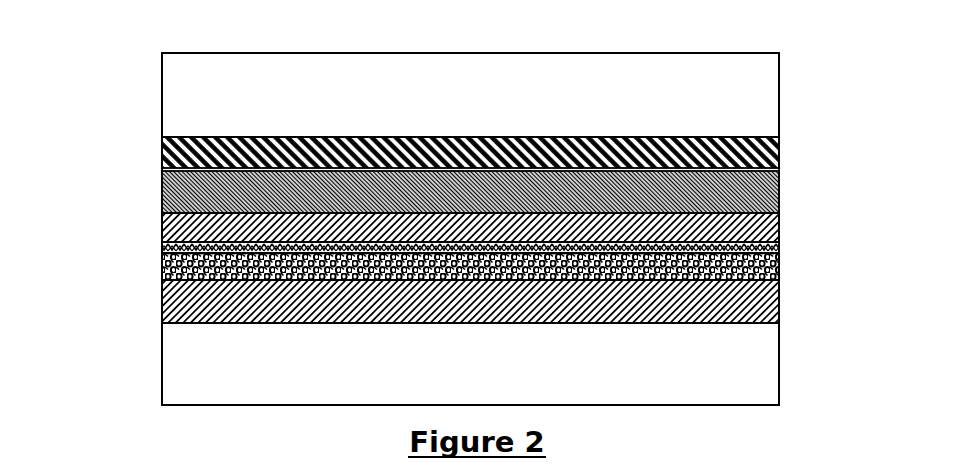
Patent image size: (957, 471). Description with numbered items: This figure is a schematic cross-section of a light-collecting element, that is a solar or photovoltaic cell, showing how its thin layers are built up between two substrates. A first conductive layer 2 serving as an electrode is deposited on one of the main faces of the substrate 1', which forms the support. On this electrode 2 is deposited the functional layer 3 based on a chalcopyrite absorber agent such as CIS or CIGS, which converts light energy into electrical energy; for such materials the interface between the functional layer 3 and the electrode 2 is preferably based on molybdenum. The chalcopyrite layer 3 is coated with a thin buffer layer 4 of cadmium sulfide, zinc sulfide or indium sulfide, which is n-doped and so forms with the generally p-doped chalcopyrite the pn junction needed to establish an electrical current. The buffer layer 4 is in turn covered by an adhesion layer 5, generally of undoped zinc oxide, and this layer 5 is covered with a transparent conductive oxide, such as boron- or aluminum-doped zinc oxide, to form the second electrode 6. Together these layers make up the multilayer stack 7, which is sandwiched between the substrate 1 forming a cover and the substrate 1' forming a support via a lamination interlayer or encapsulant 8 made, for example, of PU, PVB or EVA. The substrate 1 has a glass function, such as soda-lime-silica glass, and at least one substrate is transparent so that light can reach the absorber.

The substrate 1 is at (470, 95).
The substrate 1' is at (470, 364).
The first conductive layer 2 is at (178, 291).
The functional layer 3 is at (762, 266).
The buffer layer 4 is at (184, 246).
The adhesion layer 5 is at (176, 226).
The second electrode 6 is at (200, 198).
The multilayer stack 7 is at (80, 175).
The lamination interlayer 8 is at (172, 163).